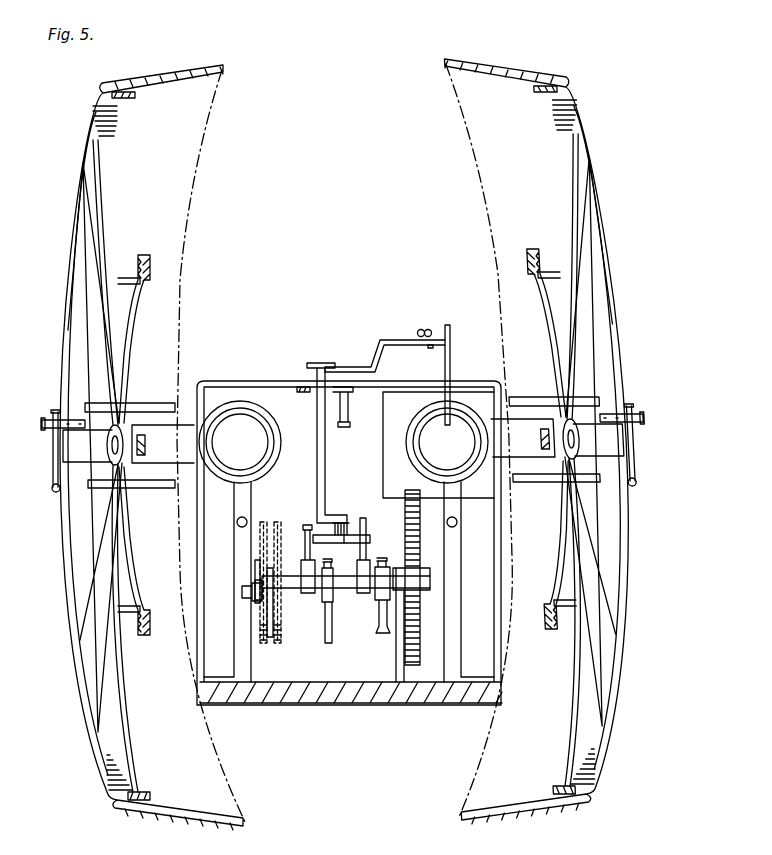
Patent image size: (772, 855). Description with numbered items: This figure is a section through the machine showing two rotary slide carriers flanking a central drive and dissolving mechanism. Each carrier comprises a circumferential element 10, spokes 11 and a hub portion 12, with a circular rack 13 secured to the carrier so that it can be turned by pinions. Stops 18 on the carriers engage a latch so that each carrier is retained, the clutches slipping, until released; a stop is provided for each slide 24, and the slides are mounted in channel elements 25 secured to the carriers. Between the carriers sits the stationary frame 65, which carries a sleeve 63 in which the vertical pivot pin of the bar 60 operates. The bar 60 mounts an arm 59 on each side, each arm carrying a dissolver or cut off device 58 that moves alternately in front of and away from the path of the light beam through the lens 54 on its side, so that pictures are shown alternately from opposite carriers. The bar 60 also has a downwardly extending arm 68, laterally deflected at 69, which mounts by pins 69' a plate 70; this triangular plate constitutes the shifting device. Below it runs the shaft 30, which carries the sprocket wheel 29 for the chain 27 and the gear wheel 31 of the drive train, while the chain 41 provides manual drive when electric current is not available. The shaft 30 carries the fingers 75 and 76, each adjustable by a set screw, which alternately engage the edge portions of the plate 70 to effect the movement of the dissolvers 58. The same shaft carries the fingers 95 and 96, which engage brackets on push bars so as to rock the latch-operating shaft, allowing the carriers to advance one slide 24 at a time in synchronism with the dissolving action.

The circumferential element 10 is at (80, 222).
The spokes 11 is at (98, 260).
The hub portion 12 is at (158, 430).
The circular rack 13 is at (140, 255).
The stops 18 is at (42, 421).
The slide 24 is at (636, 447).
The channel elements 25 is at (640, 481).
The chain 27 is at (263, 522).
The sprocket wheel 29 is at (262, 617).
The shaft 30 is at (296, 590).
The gear wheel 31 is at (420, 617).
The chain 41 is at (282, 526).
The lens 54 is at (250, 401).
The dissolvers or cut off devices 58 is at (383, 440).
The arm 59 is at (450, 330).
The bar 60 is at (400, 340).
The sleeve 63 is at (348, 407).
The stationary frame 65 is at (213, 381).
The downwardly extending arm 68 is at (317, 408).
The lateral deflection 69 is at (346, 501).
The pins 69' is at (364, 509).
The plate 70 is at (372, 540).
The finger 75 is at (329, 644).
The finger 76 is at (366, 528).
The finger 95 is at (307, 522).
The finger 96 is at (378, 616).